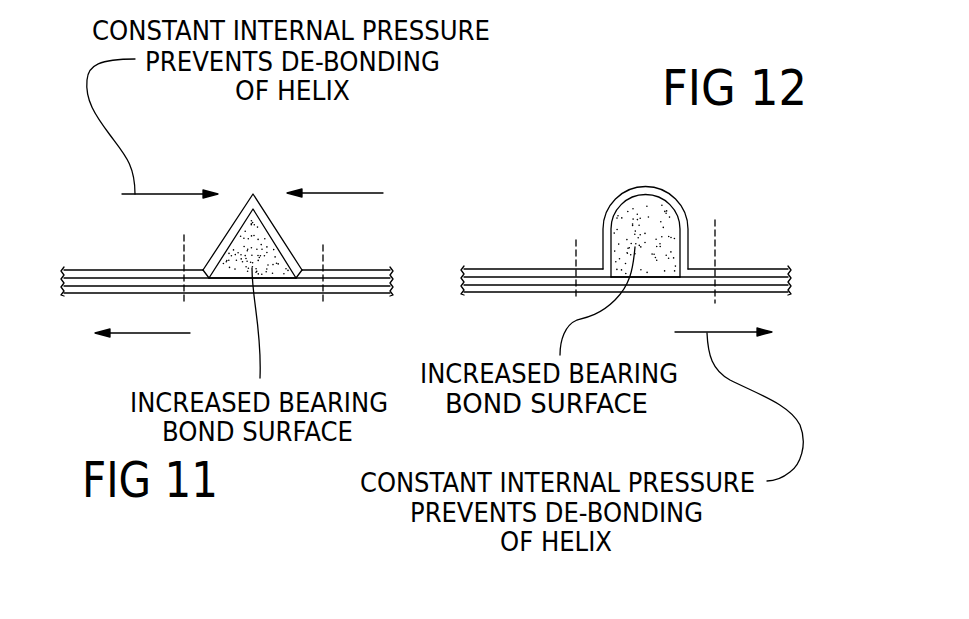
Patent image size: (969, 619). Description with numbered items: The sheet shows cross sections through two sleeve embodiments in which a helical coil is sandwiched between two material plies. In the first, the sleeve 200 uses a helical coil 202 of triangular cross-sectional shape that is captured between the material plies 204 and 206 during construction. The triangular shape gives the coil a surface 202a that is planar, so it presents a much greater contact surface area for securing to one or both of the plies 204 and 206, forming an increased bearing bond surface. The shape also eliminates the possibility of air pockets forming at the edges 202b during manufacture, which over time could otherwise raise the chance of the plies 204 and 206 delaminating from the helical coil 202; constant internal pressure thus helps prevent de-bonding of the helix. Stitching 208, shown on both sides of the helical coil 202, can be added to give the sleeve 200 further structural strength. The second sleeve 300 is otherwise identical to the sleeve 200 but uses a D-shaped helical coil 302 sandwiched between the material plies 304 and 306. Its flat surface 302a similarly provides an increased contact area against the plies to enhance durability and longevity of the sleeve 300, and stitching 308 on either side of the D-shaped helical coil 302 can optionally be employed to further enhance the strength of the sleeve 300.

In FIG. 11, the sleeve 200 is at (199, 155).
In FIG. 11, the helical coil 202 is at (258, 225).
In FIG. 11, the surface 202a is at (246, 268).
In FIG. 11, the edges 202b is at (294, 278).
In FIG. 11, the material ply 204 is at (118, 286).
In FIG. 11, the material ply 206 is at (118, 270).
In FIG. 11, the stitching 208 is at (184, 235).
In FIG. 12, the sleeve 300 is at (584, 152).
In FIG. 12, the D-shaped helical coil 302 is at (645, 203).
In FIG. 12, the flat surface 302a is at (660, 275).
In FIG. 12, the material ply 304 is at (729, 286).
In FIG. 12, the material ply 306 is at (735, 270).
In FIG. 12, the stitching 308 is at (576, 240).